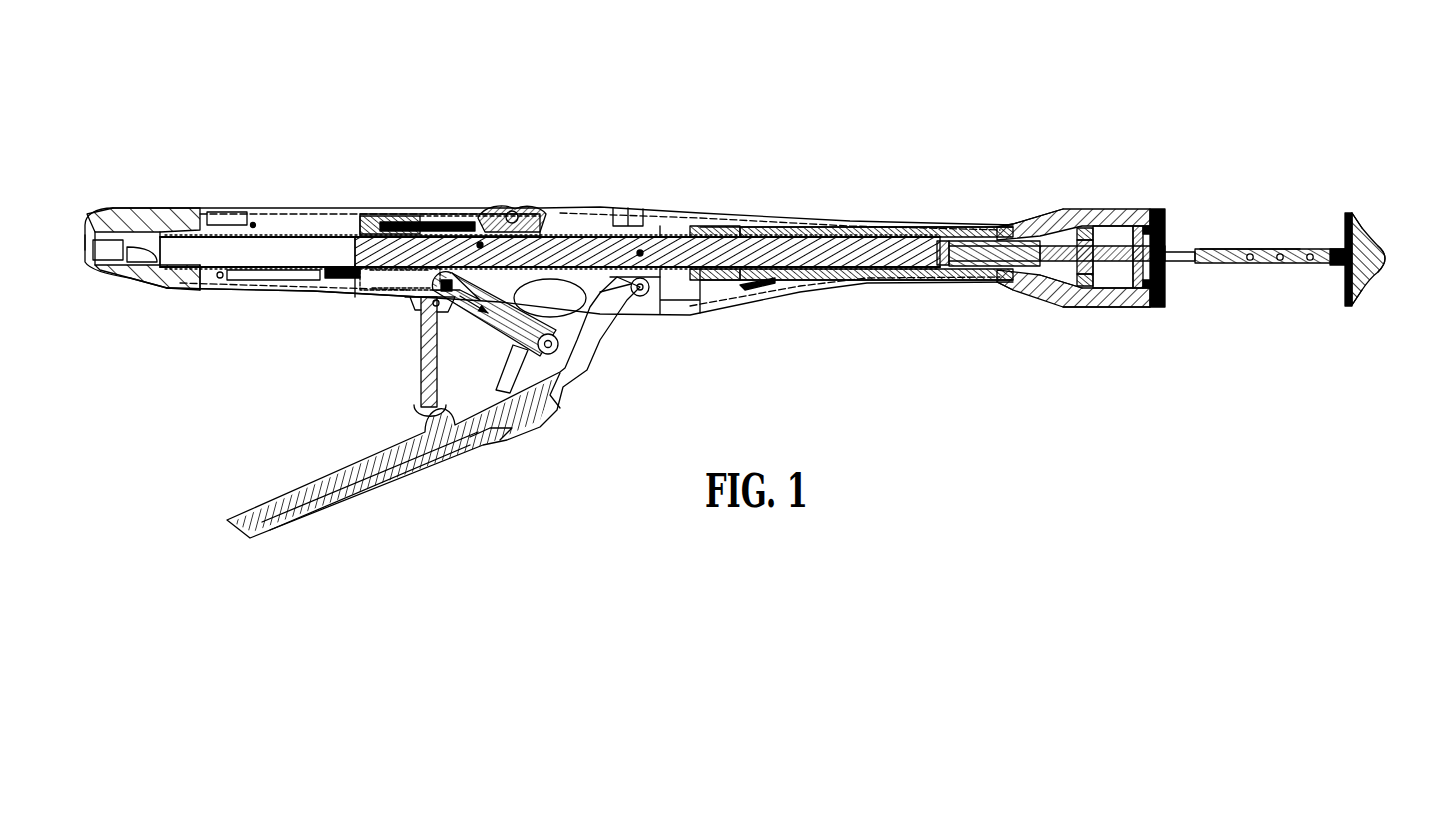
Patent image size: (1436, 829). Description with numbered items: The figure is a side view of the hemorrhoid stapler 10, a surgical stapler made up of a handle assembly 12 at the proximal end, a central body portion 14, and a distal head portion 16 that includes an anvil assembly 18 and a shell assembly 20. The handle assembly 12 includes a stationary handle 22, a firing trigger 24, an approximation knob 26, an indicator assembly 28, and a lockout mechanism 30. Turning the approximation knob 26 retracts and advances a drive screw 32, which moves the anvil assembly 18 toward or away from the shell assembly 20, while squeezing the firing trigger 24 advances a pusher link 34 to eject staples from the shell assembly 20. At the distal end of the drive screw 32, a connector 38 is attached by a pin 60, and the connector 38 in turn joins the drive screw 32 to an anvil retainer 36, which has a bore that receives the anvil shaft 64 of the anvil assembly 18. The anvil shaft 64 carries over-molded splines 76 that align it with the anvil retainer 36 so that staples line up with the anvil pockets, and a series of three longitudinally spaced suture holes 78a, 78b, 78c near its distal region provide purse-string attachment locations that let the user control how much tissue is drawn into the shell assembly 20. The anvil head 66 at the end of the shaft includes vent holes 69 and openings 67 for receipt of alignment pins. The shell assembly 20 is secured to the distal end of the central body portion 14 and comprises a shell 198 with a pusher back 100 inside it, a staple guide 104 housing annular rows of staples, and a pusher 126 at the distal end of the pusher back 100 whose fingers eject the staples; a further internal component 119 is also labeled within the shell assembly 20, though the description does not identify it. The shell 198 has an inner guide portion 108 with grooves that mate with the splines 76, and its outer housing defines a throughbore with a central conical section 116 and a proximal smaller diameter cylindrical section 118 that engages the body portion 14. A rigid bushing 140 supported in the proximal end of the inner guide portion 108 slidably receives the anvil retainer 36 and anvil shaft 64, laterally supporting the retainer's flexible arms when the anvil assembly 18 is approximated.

The hemorrhoid stapler 10 is at (727, 97).
The handle assembly 12 is at (325, 206).
The central body portion 14 is at (909, 223).
The distal head portion 16 is at (1201, 193).
The anvil assembly 18 is at (1357, 205).
The shell assembly 20 is at (1060, 206).
The stationary handle 22 is at (272, 292).
The firing trigger 24 is at (380, 487).
The approximation knob 26 is at (133, 222).
The indicator assembly 28 is at (519, 207).
The lockout mechanism 30 is at (402, 320).
The drive screw 32 is at (440, 245).
The pusher link 34 is at (927, 232).
The anvil retainer 36 is at (1080, 307).
The connector 38 is at (968, 241).
The pin 60 is at (937, 280).
The anvil shaft 64 is at (1256, 243).
The anvil head 66 is at (1370, 280).
The openings 67 is at (1362, 224).
The vent holes 69 is at (1372, 247).
The splines 76 is at (1265, 250).
The suture hole 78a is at (1250, 268).
The suture hole 78b is at (1280, 268).
The suture hole 78c is at (1311, 268).
The pusher back 100 is at (1093, 210).
The staple guide 104 is at (1162, 307).
The inner guide portion 108 is at (1118, 210).
The central conical section 116 is at (1040, 293).
The proximal smaller diameter cylindrical section 118 is at (1012, 223).
The knife 119 is at (1138, 307).
The pusher 126 is at (1148, 210).
The rigid bushing 140 is at (1008, 292).
The shell 198 is at (1096, 307).